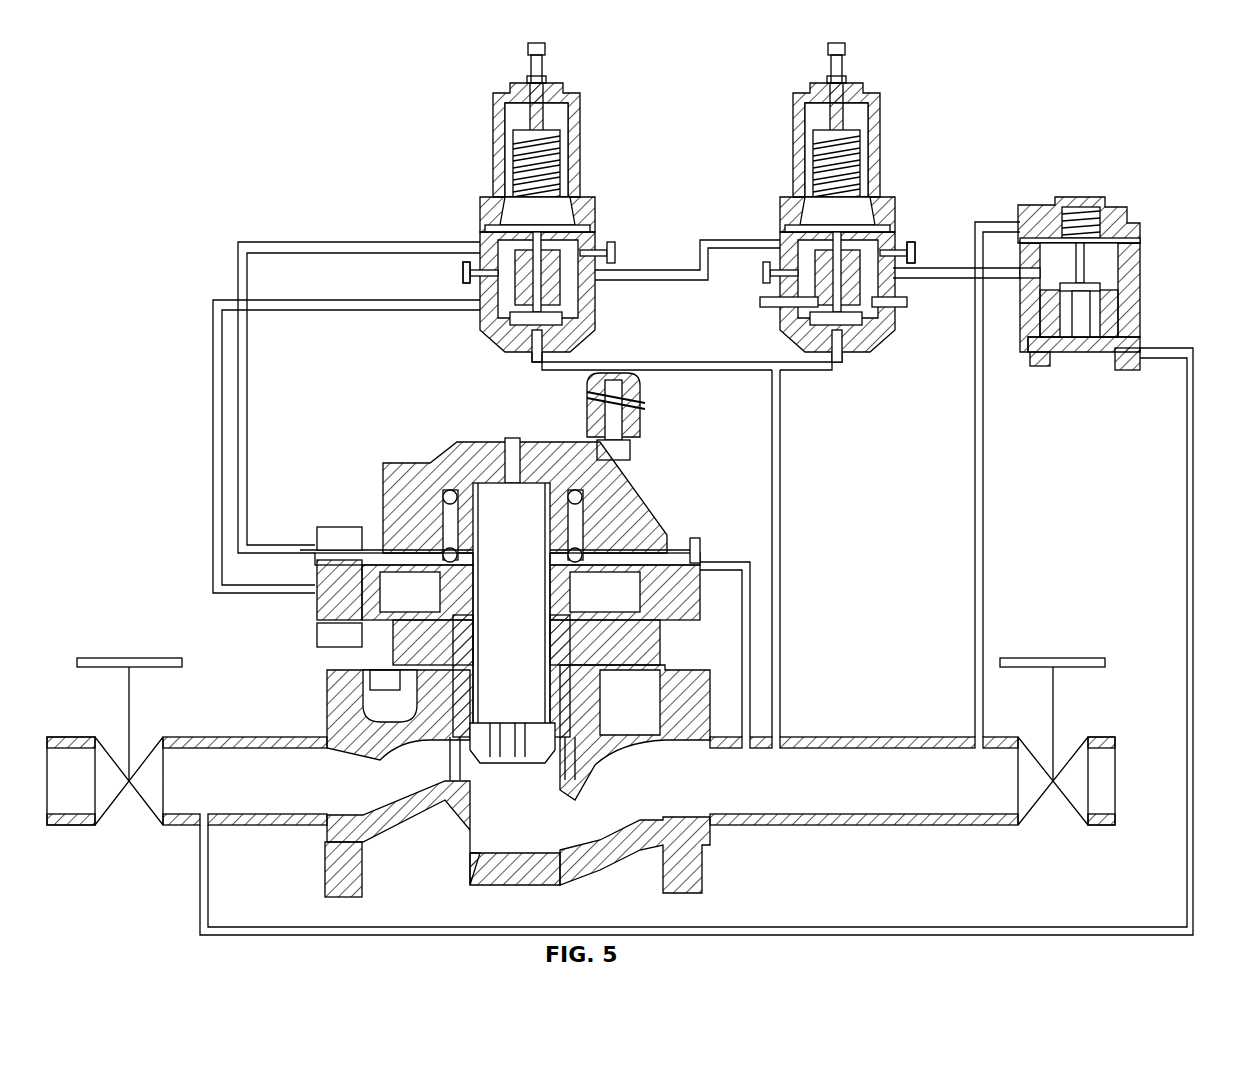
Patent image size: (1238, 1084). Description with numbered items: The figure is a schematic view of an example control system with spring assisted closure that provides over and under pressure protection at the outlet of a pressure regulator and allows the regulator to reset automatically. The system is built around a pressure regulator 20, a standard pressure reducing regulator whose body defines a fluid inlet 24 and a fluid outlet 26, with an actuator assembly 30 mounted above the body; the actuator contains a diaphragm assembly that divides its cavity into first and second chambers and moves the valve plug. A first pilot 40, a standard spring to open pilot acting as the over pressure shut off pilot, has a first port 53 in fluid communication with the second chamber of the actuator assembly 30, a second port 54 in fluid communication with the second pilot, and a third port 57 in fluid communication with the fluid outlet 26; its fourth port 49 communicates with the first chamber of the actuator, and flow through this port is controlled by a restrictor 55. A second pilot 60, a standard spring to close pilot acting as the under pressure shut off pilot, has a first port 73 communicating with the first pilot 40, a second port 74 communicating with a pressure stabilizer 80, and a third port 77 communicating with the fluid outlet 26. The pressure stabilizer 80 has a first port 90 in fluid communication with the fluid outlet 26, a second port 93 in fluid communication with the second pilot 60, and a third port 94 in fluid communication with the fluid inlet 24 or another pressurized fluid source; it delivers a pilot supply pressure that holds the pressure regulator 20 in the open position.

The pressure regulator 20 is at (505, 900).
The fluid inlet 24 is at (340, 787).
The fluid outlet 26 is at (690, 797).
The actuator assembly 30 is at (347, 460).
The first pilot 40 is at (455, 95).
The fourth port 49 is at (483, 248).
The first port 53 is at (470, 305).
The second port 54 is at (597, 273).
The restrictor 55 is at (462, 272).
The third port 57 is at (537, 352).
The second pilot 60 is at (750, 95).
The first port 73 is at (783, 248).
The second port 74 is at (898, 283).
The third port 77 is at (842, 355).
The pressure stabilizer 80 is at (1082, 185).
The first port 90 is at (1018, 225).
The second port 93 is at (1012, 278).
The third port 94 is at (1080, 348).